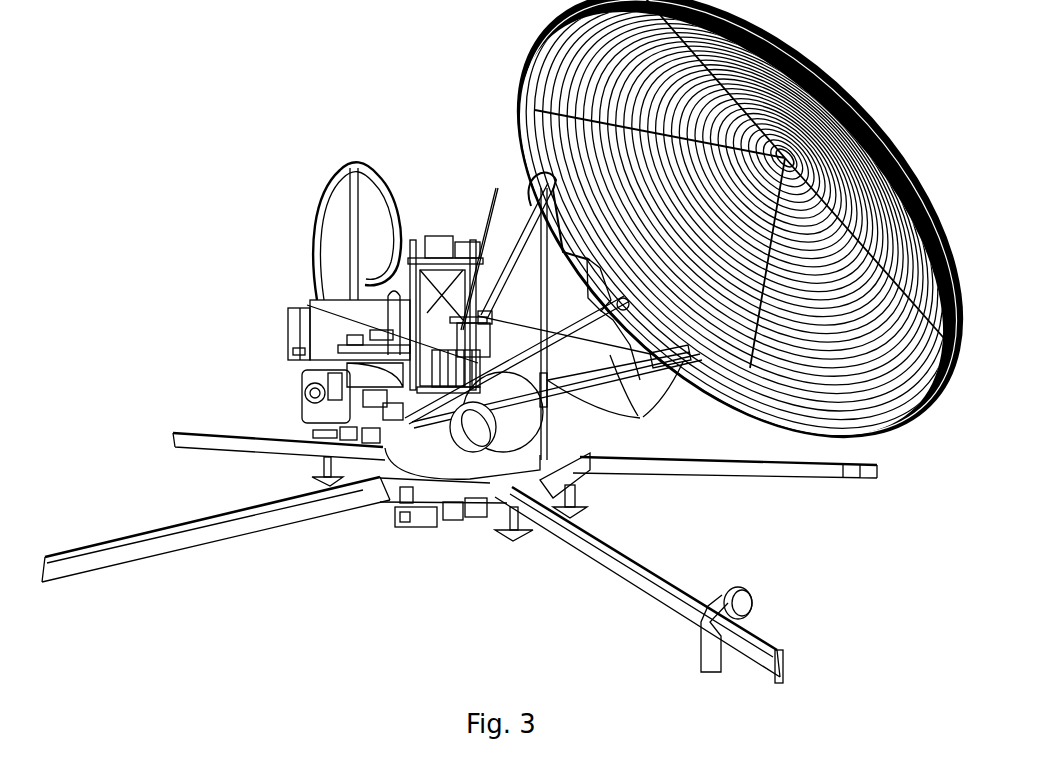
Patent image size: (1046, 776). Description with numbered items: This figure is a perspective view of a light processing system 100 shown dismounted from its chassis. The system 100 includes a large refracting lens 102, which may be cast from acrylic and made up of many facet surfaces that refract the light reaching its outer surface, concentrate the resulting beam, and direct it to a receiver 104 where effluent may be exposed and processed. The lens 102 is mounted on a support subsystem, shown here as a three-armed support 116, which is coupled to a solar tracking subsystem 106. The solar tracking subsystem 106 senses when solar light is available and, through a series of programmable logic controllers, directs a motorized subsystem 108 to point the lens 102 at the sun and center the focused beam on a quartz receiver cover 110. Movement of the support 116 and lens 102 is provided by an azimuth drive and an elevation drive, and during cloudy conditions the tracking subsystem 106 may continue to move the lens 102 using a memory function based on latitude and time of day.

The system 100 is at (250, 191).
The refracting lens 102 is at (795, 148).
The receiver 104 is at (462, 442).
The solar tracking subsystem 106 is at (387, 333).
The motorized subsystem 108 is at (521, 537).
The quartz receiver cover 110 is at (575, 472).
The three-armed support 116 is at (643, 419).